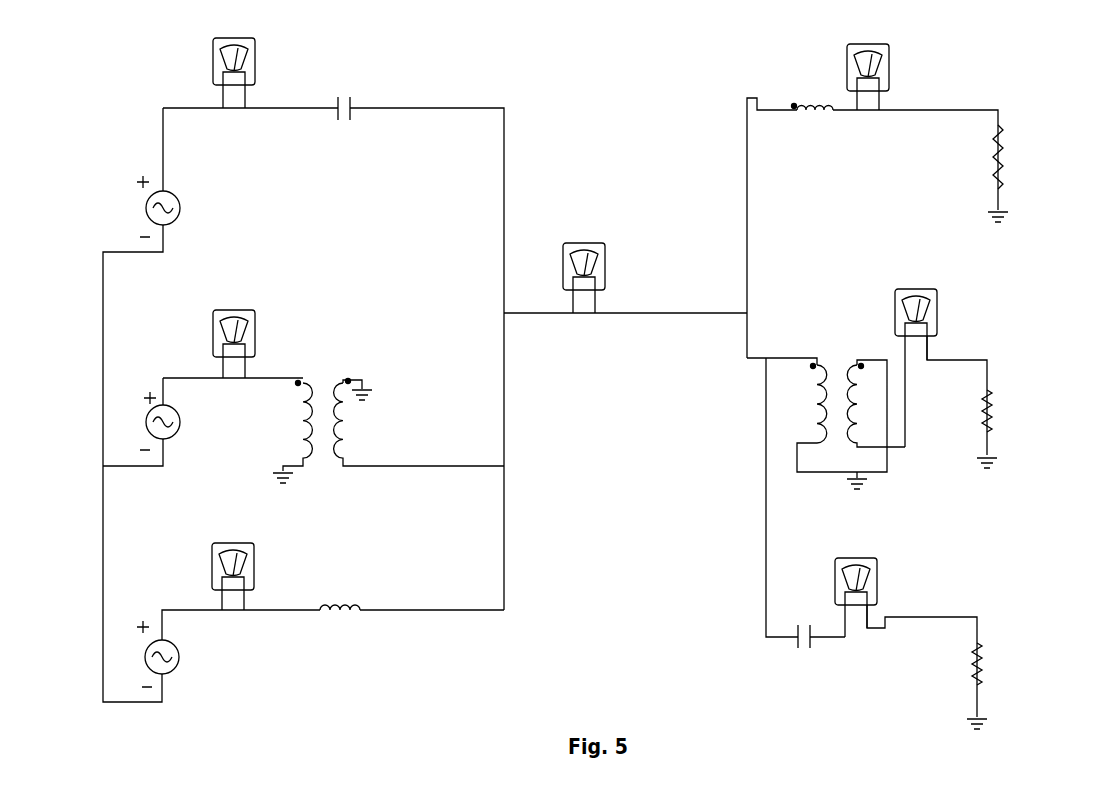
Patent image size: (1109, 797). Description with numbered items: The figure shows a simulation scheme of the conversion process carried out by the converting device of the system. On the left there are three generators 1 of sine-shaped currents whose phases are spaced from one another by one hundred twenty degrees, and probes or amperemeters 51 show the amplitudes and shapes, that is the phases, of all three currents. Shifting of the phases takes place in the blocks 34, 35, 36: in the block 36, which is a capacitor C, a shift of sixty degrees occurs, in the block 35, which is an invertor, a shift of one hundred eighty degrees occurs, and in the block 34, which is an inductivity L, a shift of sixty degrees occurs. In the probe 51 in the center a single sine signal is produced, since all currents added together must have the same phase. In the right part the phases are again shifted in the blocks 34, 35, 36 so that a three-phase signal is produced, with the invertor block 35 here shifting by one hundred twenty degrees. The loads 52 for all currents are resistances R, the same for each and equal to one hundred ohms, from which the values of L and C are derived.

The AC signal source (amplifier) 1 is at (117, 212).
The block (inductivity L) 34 is at (383, 598).
The block (invertor) 35 is at (367, 425).
The block (capacitor C) 36 is at (355, 140).
The probe (amperemeter) 51 is at (195, 70).
The load (resistance R) 52 is at (1023, 182).